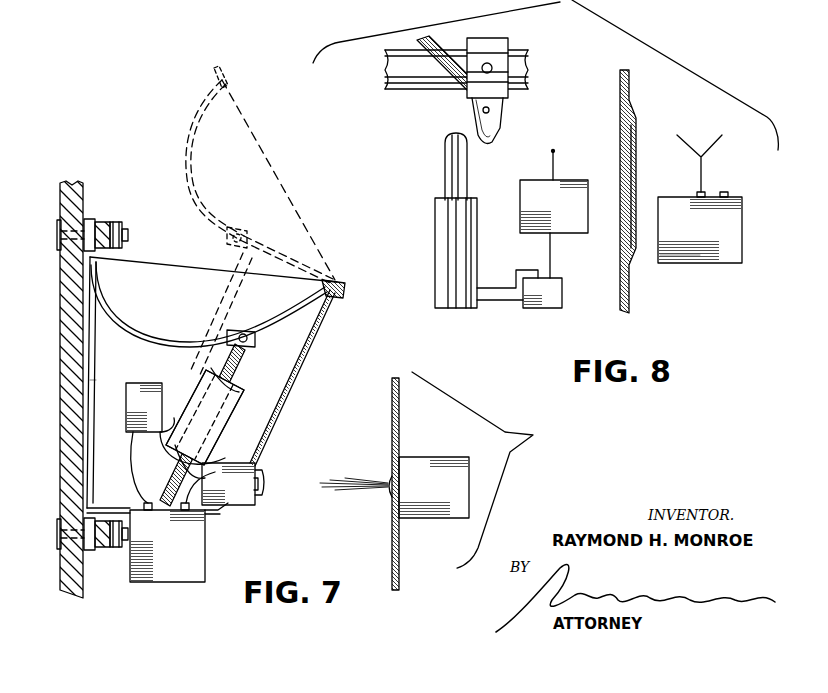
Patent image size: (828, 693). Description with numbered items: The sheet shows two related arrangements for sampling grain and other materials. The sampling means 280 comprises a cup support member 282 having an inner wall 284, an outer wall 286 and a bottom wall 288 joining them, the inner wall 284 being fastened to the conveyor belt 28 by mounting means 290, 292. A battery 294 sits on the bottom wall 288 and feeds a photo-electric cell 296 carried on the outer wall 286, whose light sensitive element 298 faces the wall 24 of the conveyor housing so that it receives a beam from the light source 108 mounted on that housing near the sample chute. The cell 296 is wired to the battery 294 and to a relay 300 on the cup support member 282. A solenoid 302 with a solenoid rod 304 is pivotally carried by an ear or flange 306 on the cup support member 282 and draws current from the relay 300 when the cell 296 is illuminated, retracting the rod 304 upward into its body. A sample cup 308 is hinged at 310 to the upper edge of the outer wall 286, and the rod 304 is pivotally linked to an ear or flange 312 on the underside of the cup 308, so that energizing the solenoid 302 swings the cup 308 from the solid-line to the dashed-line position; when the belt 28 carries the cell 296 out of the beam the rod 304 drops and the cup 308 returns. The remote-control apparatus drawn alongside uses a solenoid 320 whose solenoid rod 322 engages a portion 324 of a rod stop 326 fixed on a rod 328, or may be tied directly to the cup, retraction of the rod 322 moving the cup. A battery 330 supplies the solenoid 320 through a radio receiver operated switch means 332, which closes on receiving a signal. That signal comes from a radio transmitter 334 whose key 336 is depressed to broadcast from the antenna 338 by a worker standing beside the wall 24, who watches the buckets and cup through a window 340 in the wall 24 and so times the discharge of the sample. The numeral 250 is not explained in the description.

In FIG. 7, the wall 24 is at (399, 408).
In FIG. 8, the wall 24 is at (630, 86).
In FIG. 7, the belt 28 is at (63, 563).
In FIG. 7, the light source 108 is at (438, 460).
In FIG. 8, the control assembly 250 is at (491, 75).
In FIG. 7, the sampling means 280 is at (303, 207).
In FIG. 7, the cup support member 282 is at (288, 385).
In FIG. 7, the inner wall 284 is at (95, 372).
In FIG. 7, the outer wall 286 is at (308, 330).
In FIG. 7, the bottom wall 288 is at (148, 505).
In FIG. 7, the mounting means 290 is at (100, 221).
In FIG. 7, the mounting means 292 is at (121, 549).
In FIG. 7, the battery 294 is at (153, 570).
In FIG. 7, the photo-electric cell 296 is at (258, 503).
In FIG. 7, the light sensitive element 298 is at (262, 492).
In FIG. 7, the relay 300 is at (152, 402).
In FIG. 7, the solenoid 302 is at (228, 402).
In FIG. 7, the solenoid rod 304 is at (236, 355).
In FIG. 7, the ear or flange 306 is at (240, 463).
In FIG. 7, the sample cup 308 is at (240, 178).
In FIG. 7, the pivotal mounting 310 is at (342, 287).
In FIG. 7, the ear or flange 312 is at (257, 333).
In FIG. 8, the solenoid 320 is at (443, 250).
In FIG. 8, the solenoid rod 322 is at (448, 172).
In FIG. 8, the portion 324 is at (482, 124).
In FIG. 8, the rod stop 326 is at (497, 40).
In FIG. 8, the rod 328 is at (402, 62).
In FIG. 8, the battery 330 is at (555, 305).
In FIG. 8, the radio receiver operated switch means 332 is at (556, 222).
In FIG. 8, the radio transmitter 334 is at (700, 250).
In FIG. 8, the key 336 is at (727, 196).
In FIG. 8, the antenna 338 is at (704, 166).
In FIG. 8, the window 340 is at (636, 172).